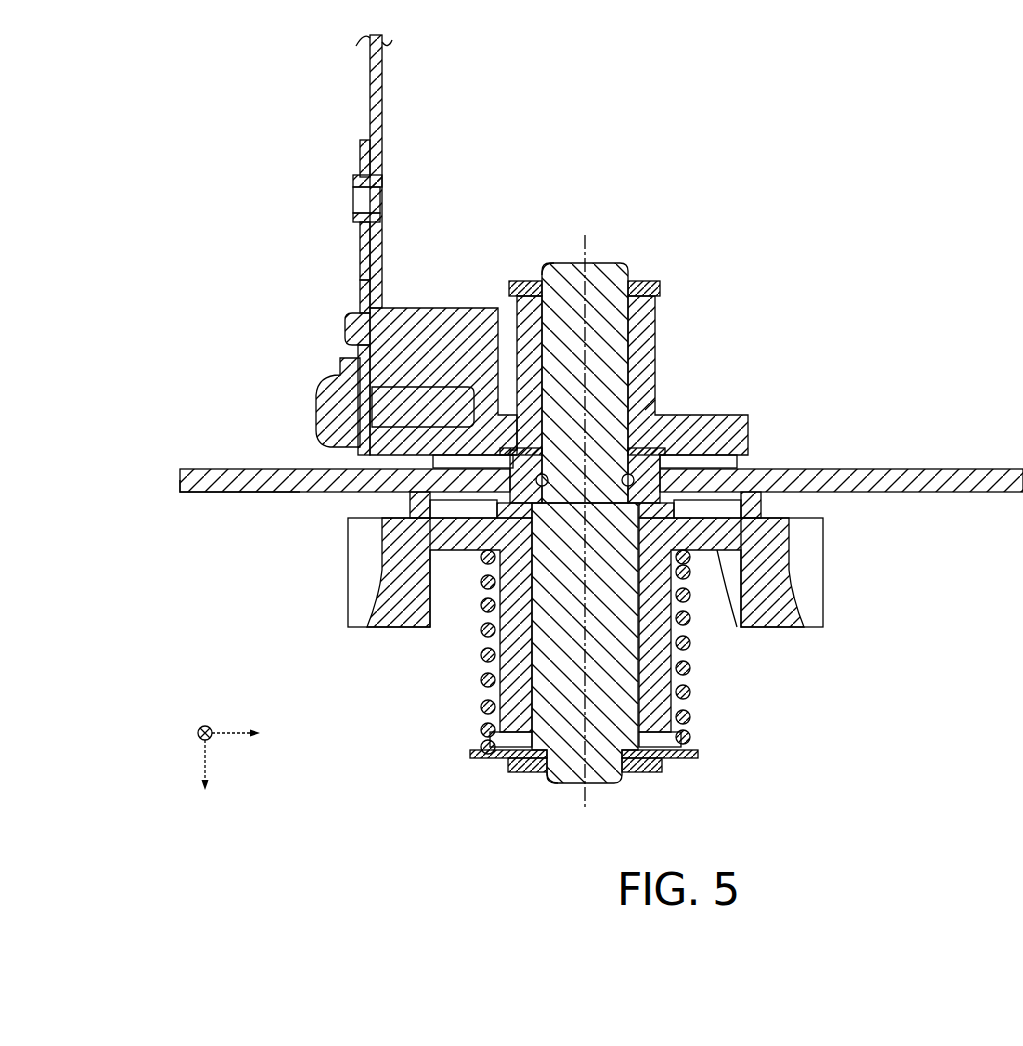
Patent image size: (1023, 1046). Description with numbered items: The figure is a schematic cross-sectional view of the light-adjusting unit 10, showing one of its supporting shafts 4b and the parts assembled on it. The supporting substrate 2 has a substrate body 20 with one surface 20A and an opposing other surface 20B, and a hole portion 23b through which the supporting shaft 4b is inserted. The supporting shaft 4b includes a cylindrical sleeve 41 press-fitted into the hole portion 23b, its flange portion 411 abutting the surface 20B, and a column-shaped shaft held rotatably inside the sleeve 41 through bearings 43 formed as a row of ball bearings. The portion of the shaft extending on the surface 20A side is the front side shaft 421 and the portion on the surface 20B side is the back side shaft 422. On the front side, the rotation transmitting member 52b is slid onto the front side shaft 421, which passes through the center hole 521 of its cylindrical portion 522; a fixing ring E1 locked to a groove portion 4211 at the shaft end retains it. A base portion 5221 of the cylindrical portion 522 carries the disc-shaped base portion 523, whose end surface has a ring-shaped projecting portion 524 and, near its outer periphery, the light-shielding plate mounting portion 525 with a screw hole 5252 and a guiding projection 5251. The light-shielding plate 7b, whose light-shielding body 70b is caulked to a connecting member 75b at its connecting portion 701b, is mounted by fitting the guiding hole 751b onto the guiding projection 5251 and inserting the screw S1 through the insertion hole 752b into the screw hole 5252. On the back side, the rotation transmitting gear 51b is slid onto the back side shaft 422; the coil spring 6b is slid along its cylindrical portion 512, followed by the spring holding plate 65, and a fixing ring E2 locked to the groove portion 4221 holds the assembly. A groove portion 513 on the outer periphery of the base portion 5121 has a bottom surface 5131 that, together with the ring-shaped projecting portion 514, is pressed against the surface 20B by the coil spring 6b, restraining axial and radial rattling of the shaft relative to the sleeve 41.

The light-adjusting unit 10 is at (561, 445).
The supporting substrate 2 is at (561, 500).
The substrate body 20 is at (561, 491).
The surface 20A is at (215, 469).
The surface 20B is at (207, 497).
The hole portion 23b is at (757, 472).
The supporting shaft 4b is at (500, 509).
The front side shaft 421 is at (607, 287).
The groove portion 4211 is at (560, 287).
The back side shaft 422 is at (602, 770).
The groove portion 4221 is at (568, 768).
The sleeve 41 is at (447, 492).
The flange portion 411 is at (417, 567).
The bearing 43 is at (500, 570).
The fixing ring E1 is at (660, 292).
The fixing ring E2 is at (640, 775).
The rotation transmitting member 52b is at (620, 372).
The center hole 521 is at (657, 314).
The cylindrical portion 522 is at (685, 399).
The base portion 5221 is at (657, 403).
The base portion 523 is at (668, 415).
The projecting portion 524 is at (745, 463).
The light-shielding plate mounting portion 525 is at (487, 307).
The screw hole 5252 is at (430, 387).
The guiding projection 5251 is at (345, 335).
The light-shielding plate 7b is at (346, 245).
The light-shielding body 70b is at (372, 78).
The connecting portion 701b is at (382, 232).
The connecting member 75b is at (360, 248).
The guiding hole 751b is at (360, 297).
The insertion hole 752b is at (347, 357).
The screw S1 is at (307, 405).
The rotation transmitting gear 51b is at (751, 623).
The cylindrical portion 512 is at (660, 710).
The base portion 5121 is at (663, 645).
The groove portion 513 is at (685, 625).
The bottom surface 5131 is at (705, 620).
The projecting portion 514 is at (762, 503).
The coil spring 6b is at (690, 737).
The spring holding plate 65 is at (690, 762).